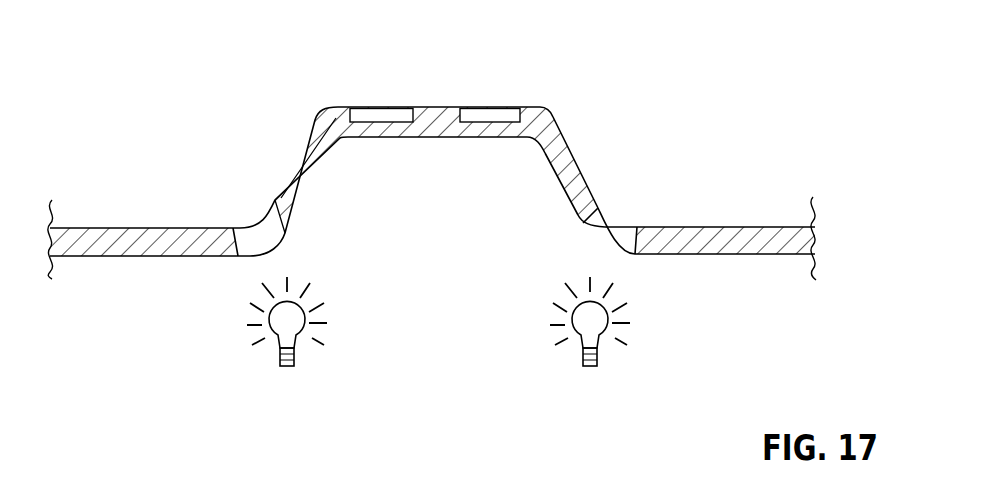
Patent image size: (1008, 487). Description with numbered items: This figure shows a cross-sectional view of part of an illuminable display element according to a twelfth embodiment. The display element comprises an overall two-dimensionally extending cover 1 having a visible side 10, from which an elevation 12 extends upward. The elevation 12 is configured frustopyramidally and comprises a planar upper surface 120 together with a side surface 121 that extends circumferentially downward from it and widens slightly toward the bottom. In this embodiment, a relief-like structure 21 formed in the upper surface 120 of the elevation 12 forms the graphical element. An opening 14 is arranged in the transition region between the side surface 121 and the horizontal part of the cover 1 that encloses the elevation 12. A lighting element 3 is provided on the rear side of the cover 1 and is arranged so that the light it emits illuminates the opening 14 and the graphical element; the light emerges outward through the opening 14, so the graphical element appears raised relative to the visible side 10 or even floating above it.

The cover 1 is at (746, 232).
The visible side 10 is at (137, 228).
The elevation 12 is at (350, 83).
The upper surface 120 is at (428, 107).
The relief-like structure 21 is at (490, 115).
The side surface 121 is at (582, 168).
The opening 14 is at (616, 232).
The lighting element 3 is at (588, 328).